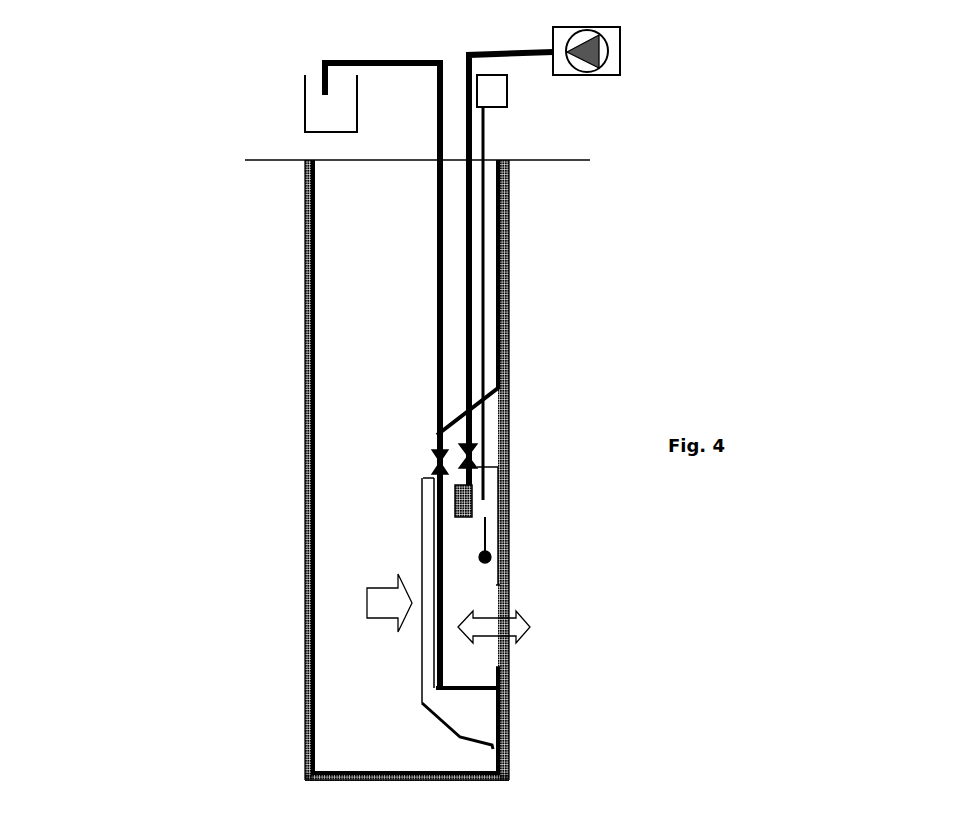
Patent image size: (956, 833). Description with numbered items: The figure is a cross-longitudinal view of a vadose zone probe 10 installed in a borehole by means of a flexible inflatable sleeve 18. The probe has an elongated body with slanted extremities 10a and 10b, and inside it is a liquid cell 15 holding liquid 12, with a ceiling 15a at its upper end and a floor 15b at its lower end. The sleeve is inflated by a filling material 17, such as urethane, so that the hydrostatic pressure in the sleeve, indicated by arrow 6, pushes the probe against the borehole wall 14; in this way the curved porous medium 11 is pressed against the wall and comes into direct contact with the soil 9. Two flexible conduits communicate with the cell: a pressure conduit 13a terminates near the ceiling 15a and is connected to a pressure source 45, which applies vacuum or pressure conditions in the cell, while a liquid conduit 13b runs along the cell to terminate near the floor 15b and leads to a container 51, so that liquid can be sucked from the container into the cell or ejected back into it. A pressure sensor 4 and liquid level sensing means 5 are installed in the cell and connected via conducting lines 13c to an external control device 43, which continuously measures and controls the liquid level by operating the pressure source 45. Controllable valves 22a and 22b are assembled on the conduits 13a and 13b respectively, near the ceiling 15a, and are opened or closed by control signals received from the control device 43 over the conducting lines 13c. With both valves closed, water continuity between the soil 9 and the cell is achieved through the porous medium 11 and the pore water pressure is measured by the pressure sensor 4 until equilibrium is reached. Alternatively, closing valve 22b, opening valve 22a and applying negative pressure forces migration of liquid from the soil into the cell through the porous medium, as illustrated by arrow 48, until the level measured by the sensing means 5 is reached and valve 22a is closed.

The pressure sensor 4 is at (472, 501).
The liquid level sensing means 5 is at (489, 552).
The hydrostatic pressure arrow 6 is at (378, 604).
The soil 9 is at (593, 328).
The vadose zone probe 10 is at (495, 455).
The slanted extremity 10a is at (430, 457).
The slanted extremity 10b is at (467, 737).
The porous medium 11 is at (505, 602).
The liquid 12 is at (477, 575).
The pressure conduit 13a is at (470, 285).
The liquid conduit 13b is at (442, 238).
The conducting lines 13c is at (486, 146).
The borehole wall 14 is at (310, 412).
The liquid cell 15 is at (430, 552).
The ceiling of liquid cell 15a is at (423, 477).
The floor of liquid cell 15b is at (507, 687).
The filling material 17 is at (343, 270).
The inflatable sleeve 18 is at (313, 488).
The controllable valve 22a is at (470, 450).
The controllable valve 22b is at (423, 465).
The control device 43 is at (507, 80).
The pressure source 45 is at (622, 52).
The liquid migration arrow 48 is at (530, 628).
The container 51 is at (305, 112).